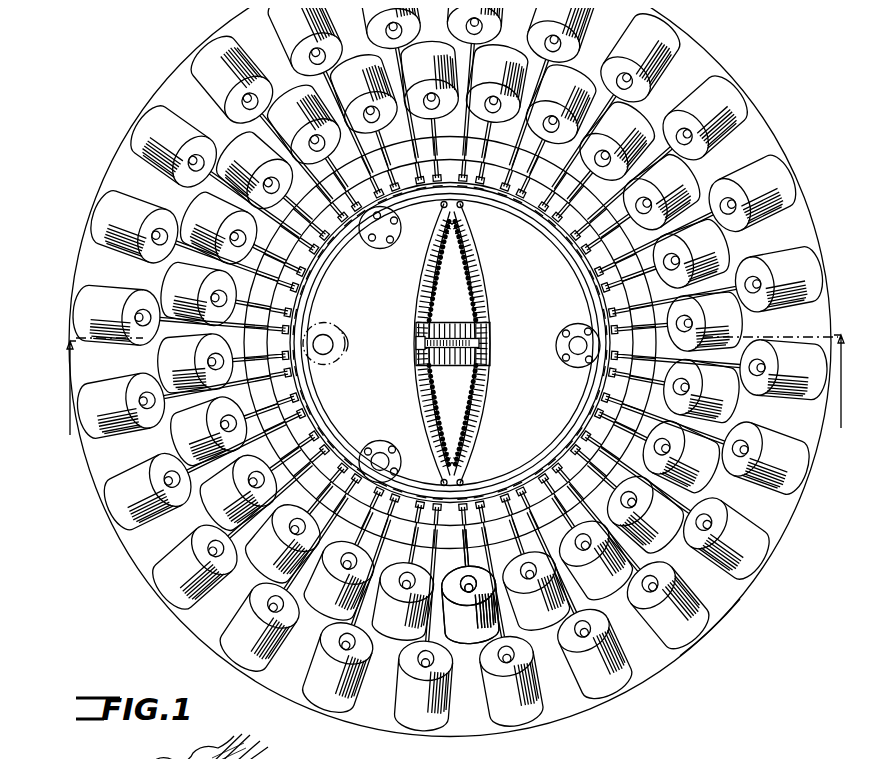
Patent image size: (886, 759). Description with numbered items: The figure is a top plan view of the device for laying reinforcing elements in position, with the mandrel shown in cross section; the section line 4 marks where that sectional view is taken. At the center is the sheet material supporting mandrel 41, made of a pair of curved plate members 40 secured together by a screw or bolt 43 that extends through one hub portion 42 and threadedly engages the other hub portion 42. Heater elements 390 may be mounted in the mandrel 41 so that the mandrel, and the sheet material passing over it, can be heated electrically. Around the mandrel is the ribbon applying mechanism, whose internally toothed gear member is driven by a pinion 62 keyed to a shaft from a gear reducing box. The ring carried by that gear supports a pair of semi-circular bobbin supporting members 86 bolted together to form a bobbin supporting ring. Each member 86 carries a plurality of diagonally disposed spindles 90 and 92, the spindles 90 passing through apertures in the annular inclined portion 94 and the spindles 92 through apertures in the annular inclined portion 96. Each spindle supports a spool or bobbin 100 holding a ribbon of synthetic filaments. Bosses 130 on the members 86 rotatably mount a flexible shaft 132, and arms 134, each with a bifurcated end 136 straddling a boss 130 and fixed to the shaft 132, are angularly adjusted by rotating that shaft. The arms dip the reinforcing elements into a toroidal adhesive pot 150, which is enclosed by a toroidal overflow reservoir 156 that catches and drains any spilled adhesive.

The section line 4- 4 is at (455, 394).
The curved plate members 40 is at (426, 268).
The sheet material supporting mandrel 41 is at (484, 321).
The hub portion 42 is at (434, 323).
The screw or bolt 43 is at (428, 339).
The pinion 62 is at (344, 355).
The semi-circular bobbin supporting members 86 is at (783, 523).
The spindles 90 is at (651, 447).
The spindles 92 is at (662, 573).
The annular inclined portion 94 is at (495, 622).
The annular inclined portion 96 is at (672, 661).
The spool or bobbin 100 is at (450, 381).
The bosses 130 is at (318, 434).
The flexible shaft 132 is at (610, 404).
The arms 134 is at (201, 743).
The bifurcated end 136 is at (553, 234).
The toroidal adhesive container or pot 150 is at (598, 304).
The overflow reservoir 156 is at (517, 474).
The heater elements 390 is at (478, 394).